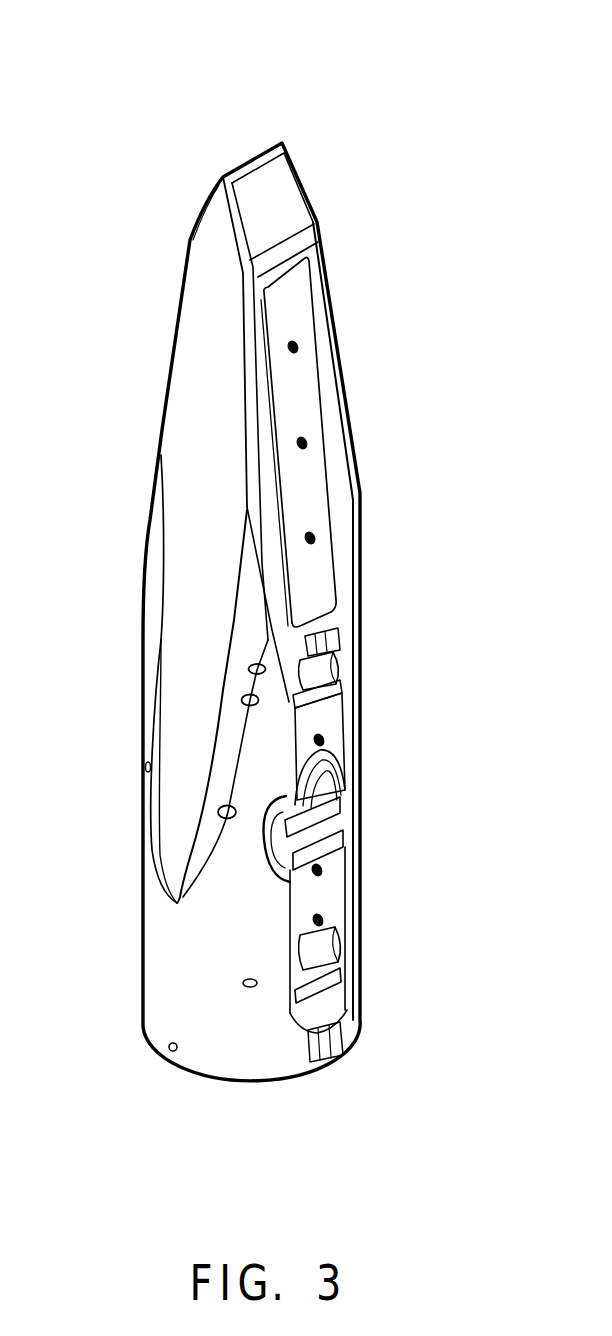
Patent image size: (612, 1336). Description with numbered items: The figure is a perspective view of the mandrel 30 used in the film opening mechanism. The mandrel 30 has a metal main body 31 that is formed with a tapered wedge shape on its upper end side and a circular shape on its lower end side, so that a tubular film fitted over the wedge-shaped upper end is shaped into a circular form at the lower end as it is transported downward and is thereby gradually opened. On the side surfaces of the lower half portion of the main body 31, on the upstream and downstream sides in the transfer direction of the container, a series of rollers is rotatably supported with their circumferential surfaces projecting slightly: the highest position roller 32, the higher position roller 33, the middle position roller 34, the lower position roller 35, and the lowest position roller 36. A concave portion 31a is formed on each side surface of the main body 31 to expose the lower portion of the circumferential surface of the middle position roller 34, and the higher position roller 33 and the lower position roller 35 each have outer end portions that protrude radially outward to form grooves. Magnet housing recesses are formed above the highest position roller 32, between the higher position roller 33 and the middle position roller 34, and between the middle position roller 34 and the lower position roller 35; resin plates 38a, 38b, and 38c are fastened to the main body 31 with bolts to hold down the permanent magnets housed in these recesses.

The mandrel 30 is at (248, 80).
The main body 31 is at (170, 543).
The concave portion 31a is at (340, 820).
The highest position roller 32 is at (345, 629).
The higher position roller 33 is at (315, 672).
The middle position roller 34 is at (318, 784).
The lower position roller 35 is at (320, 952).
The lowest position roller 36 is at (340, 1045).
The resin plate 38a is at (300, 398).
The resin plate 38b is at (330, 725).
The resin plate 38c is at (322, 895).